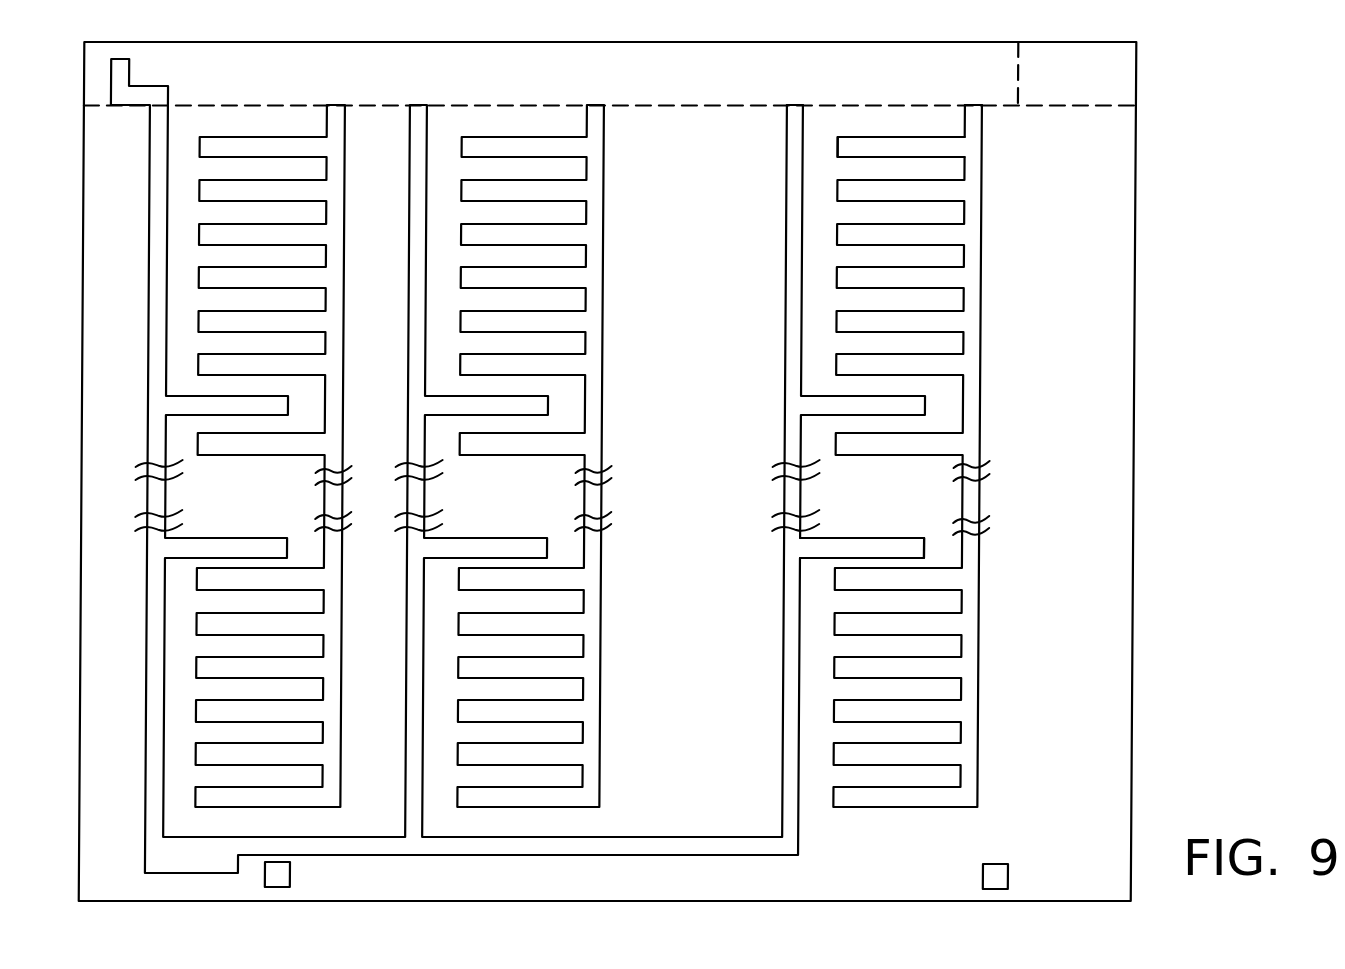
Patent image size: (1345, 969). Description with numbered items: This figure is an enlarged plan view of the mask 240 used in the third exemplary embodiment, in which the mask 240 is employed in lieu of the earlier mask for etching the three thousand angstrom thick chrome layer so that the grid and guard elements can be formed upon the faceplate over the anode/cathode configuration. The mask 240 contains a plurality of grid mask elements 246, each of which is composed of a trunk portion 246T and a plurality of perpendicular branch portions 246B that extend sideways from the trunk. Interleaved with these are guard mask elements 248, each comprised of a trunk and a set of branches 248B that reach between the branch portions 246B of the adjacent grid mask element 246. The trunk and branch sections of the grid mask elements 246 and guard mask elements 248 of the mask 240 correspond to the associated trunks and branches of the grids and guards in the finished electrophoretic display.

The mask 240 is at (105, 210).
The grid mask element 246 is at (985, 341).
The trunk portion 246T is at (788, 104).
The branch portions 246B is at (903, 142).
The guard mask element 248 is at (786, 218).
The branches 248B is at (878, 540).